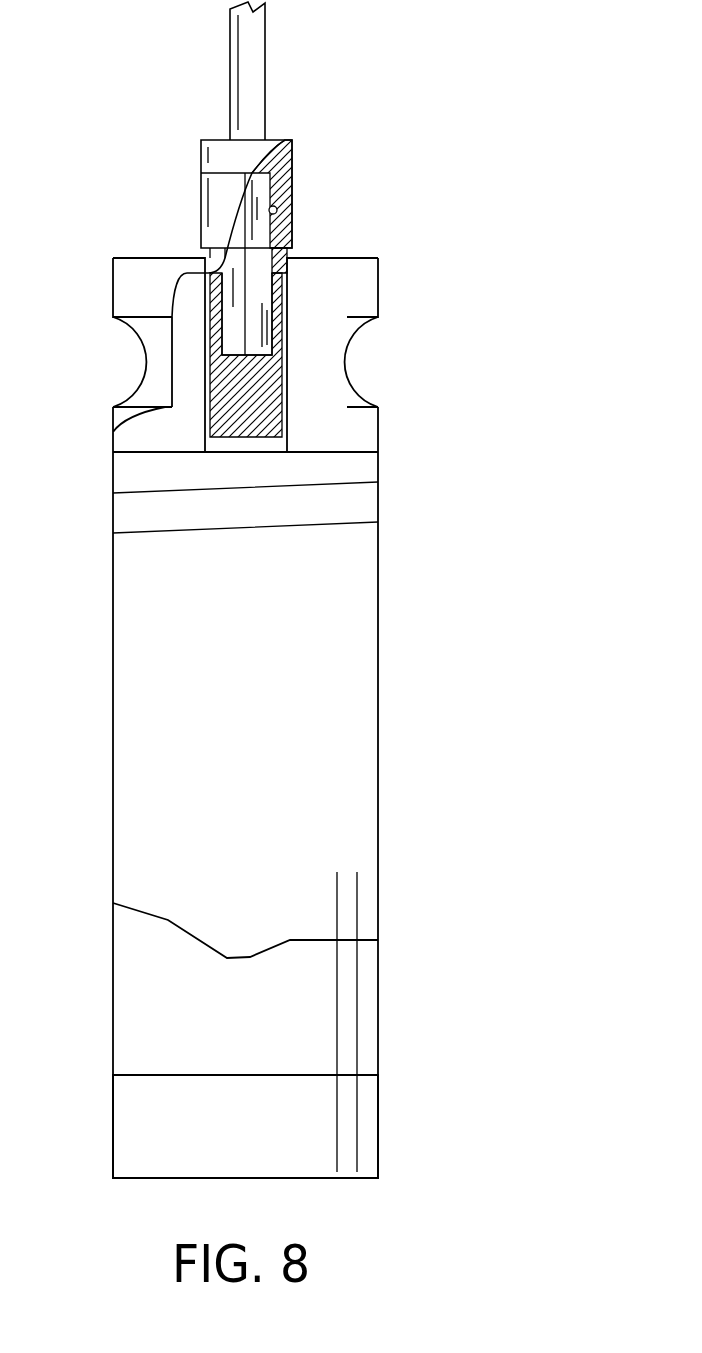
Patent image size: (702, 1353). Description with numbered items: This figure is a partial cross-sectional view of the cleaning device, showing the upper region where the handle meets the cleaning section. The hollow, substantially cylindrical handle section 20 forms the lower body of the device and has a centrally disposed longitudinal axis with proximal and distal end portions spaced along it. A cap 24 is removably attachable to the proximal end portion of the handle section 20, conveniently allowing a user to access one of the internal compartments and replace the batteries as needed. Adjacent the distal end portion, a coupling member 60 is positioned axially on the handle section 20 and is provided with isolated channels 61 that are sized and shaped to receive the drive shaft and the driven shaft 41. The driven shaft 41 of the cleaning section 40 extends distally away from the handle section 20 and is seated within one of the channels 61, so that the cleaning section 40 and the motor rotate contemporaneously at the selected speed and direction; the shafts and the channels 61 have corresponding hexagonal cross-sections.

The handle section 20 is at (378, 647).
The cap 24 is at (378, 1125).
The cleaning section 40 is at (265, 53).
The driven shaft 41 is at (238, 92).
The coupling member 60 is at (292, 230).
The isolated channels 61 is at (253, 305).